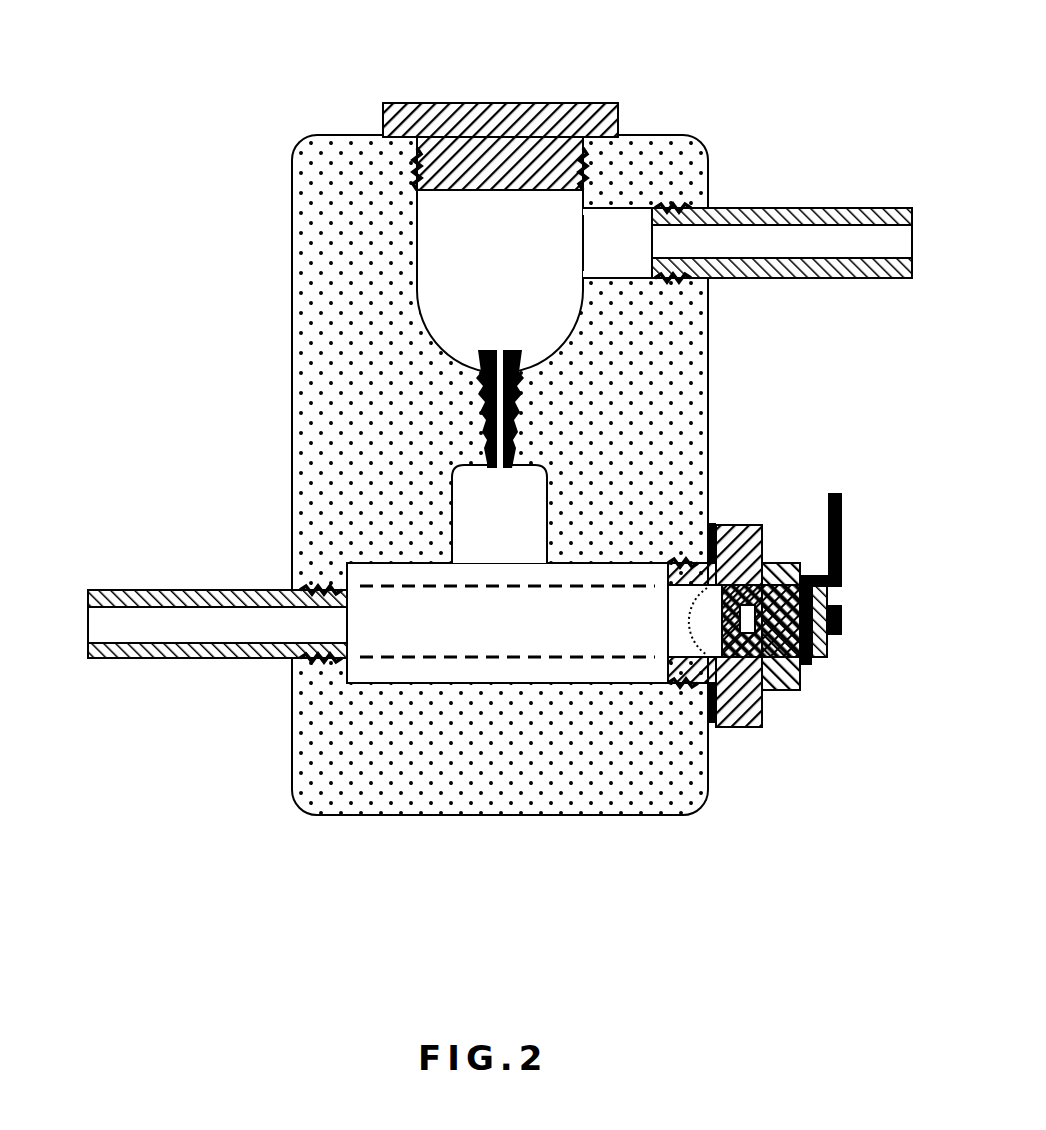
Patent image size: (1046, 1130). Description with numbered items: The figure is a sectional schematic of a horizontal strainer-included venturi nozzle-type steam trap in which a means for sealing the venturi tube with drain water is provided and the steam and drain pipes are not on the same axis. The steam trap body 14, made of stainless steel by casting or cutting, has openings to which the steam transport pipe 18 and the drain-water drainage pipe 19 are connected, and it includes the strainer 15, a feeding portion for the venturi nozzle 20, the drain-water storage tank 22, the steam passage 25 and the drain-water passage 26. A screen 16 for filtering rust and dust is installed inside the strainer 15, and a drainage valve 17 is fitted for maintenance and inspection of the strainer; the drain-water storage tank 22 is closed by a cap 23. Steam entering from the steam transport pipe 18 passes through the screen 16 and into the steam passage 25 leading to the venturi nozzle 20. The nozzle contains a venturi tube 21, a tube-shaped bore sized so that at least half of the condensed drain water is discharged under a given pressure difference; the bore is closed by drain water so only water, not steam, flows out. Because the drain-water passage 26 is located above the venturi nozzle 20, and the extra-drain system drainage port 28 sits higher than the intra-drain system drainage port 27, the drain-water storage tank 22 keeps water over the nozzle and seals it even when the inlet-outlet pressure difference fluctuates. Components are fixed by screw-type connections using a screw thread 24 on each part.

The steam trap body 14 is at (328, 818).
The strainer 15 is at (490, 686).
The screen 16 is at (574, 662).
The drainage valve 17 is at (780, 695).
The steam transport pipe 18 is at (188, 588).
The drain-water drainage pipe 19 is at (792, 206).
The venturi nozzle 20 is at (480, 452).
The venturi tube 21 is at (500, 482).
The drain-water storage tank 22 is at (415, 238).
The cap 23 is at (510, 100).
The screw thread 24 is at (416, 160).
The steam passage 25 is at (552, 538).
The drain-water passage 26 is at (610, 203).
The intra-drain system drainage port 27 is at (500, 347).
The extra-drain system drainage port 28 is at (587, 264).